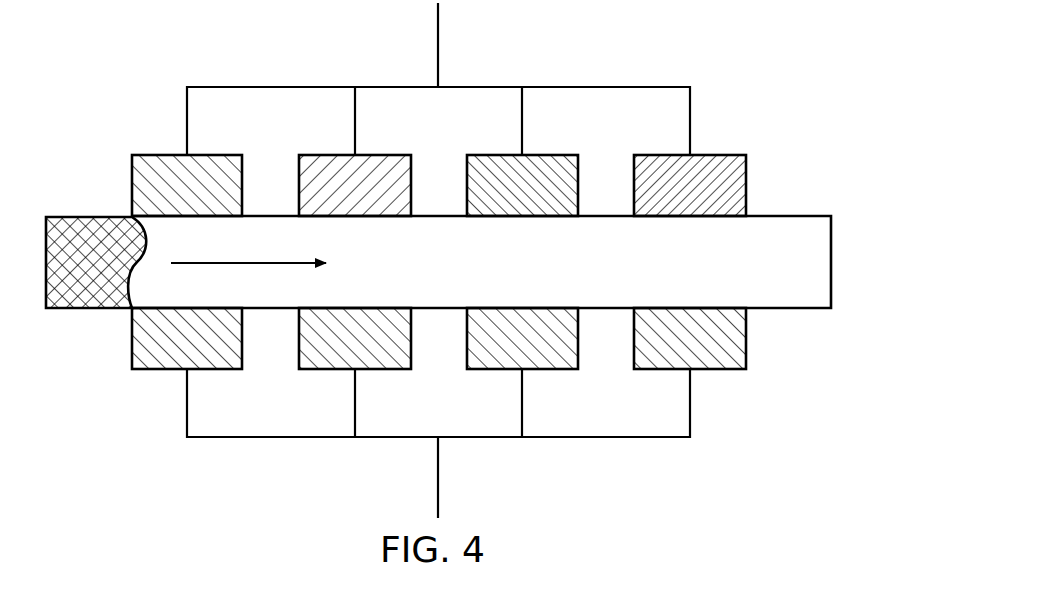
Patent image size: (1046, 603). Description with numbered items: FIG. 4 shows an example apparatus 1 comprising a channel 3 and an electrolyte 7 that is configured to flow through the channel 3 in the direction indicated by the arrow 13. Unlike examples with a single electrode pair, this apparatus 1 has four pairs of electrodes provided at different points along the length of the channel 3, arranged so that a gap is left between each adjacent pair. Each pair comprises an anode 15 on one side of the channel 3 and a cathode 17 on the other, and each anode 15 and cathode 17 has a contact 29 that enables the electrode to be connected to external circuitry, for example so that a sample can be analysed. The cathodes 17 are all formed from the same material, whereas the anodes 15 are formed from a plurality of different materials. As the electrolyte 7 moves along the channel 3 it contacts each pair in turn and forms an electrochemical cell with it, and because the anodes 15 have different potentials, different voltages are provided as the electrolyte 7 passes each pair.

The apparatus 1 is at (655, 57).
The channel 3 is at (782, 263).
The electrolyte 7 is at (92, 208).
The arrow 13 is at (264, 254).
The anode 15 is at (230, 190).
The cathode 17 is at (162, 355).
The contact 29 is at (188, 125).